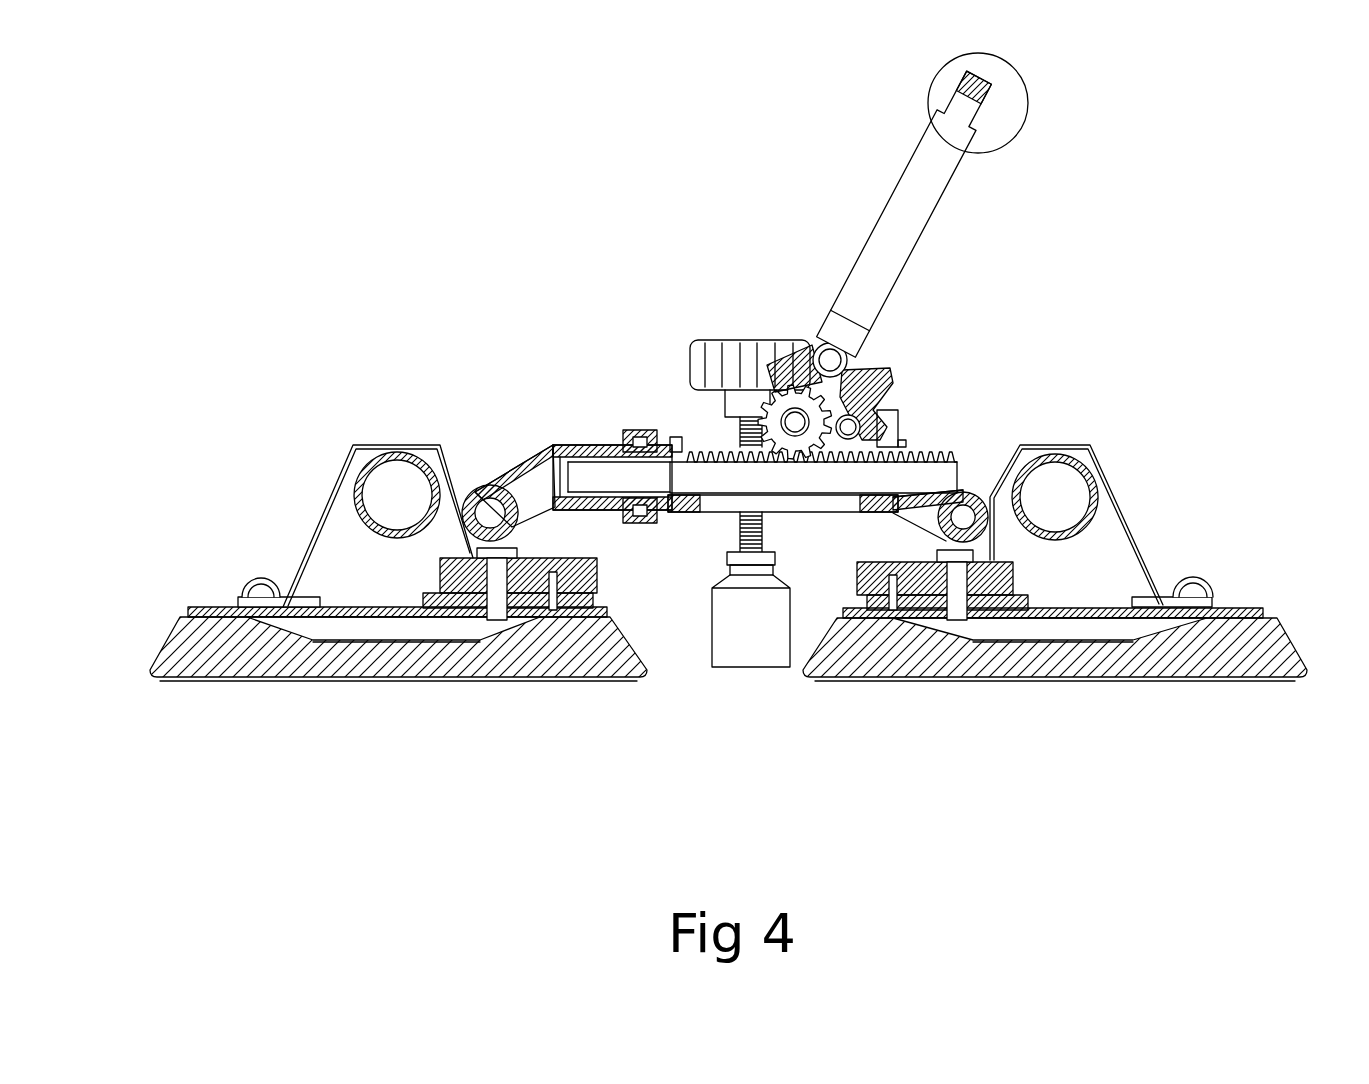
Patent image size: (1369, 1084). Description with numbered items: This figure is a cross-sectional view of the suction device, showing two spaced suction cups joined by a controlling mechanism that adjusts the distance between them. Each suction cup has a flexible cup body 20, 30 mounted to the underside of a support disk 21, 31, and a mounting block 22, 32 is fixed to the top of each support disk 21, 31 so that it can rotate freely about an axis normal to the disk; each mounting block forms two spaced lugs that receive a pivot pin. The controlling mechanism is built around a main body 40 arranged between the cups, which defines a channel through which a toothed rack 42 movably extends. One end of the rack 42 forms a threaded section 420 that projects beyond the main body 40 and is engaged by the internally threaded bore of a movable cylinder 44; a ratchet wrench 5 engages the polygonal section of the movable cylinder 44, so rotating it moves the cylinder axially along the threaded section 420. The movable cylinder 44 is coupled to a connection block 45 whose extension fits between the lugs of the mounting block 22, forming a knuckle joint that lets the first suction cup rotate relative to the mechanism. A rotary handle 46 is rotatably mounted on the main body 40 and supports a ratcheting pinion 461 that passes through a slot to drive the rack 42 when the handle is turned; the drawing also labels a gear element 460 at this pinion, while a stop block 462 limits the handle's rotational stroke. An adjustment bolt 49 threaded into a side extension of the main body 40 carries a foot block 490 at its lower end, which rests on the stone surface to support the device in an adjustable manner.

The flexible cup body 20 is at (190, 675).
The support disk 21 is at (210, 607).
The mounting block 22 is at (553, 590).
The flexible cup body 30 is at (1213, 660).
The support disk 31 is at (1257, 607).
The mounting block 32 is at (890, 583).
The main body 40 is at (808, 505).
The rack 42 is at (905, 478).
The movable cylinder 44 is at (657, 500).
The connection block 45 is at (527, 475).
The rotary handle 46 is at (917, 213).
The adjustment bolt 49 is at (722, 358).
The ratchet wrench 5 is at (638, 430).
The threaded section 420 is at (603, 470).
The gear 460 is at (757, 413).
The ratcheting pinion 461 is at (787, 347).
The stop block 462 is at (888, 380).
The foot block 490 is at (763, 652).